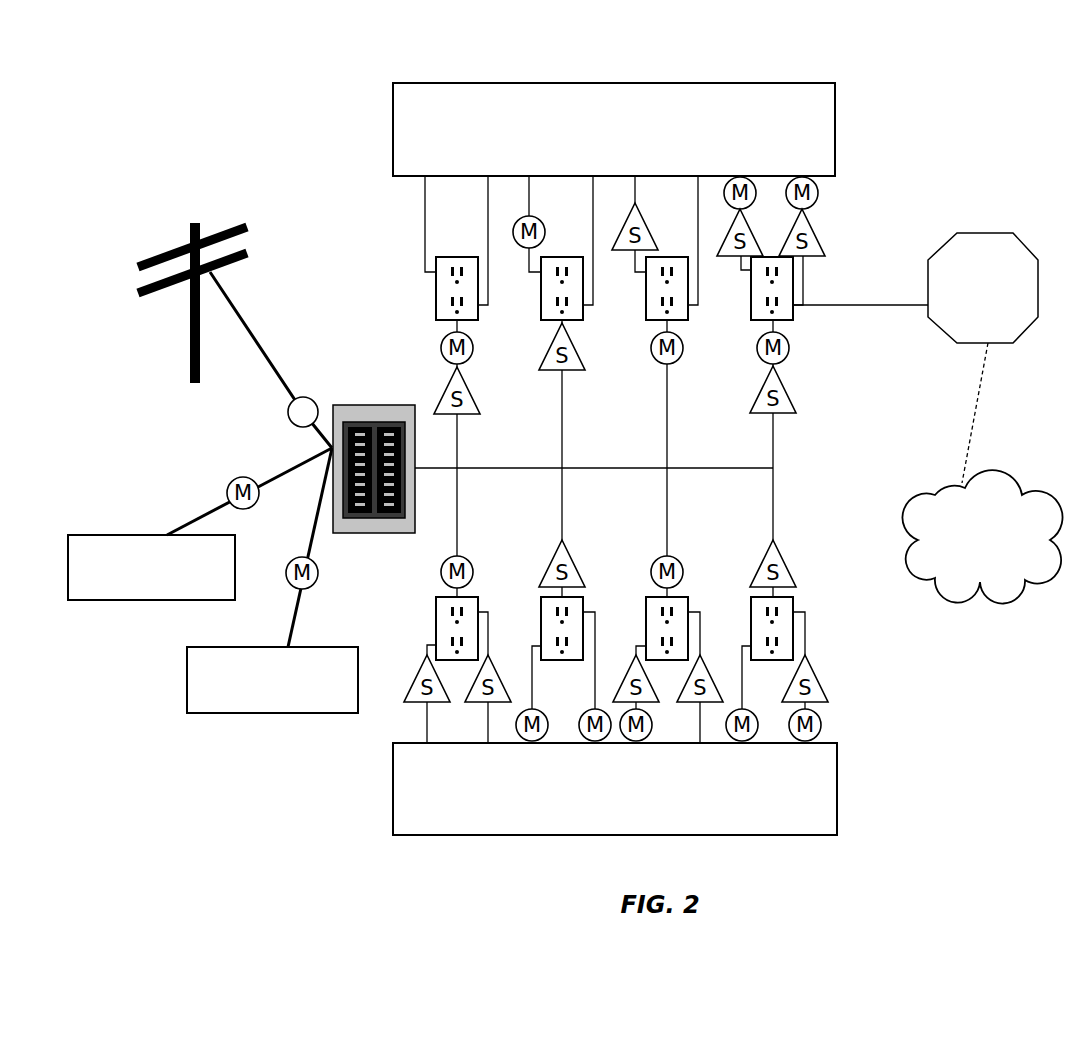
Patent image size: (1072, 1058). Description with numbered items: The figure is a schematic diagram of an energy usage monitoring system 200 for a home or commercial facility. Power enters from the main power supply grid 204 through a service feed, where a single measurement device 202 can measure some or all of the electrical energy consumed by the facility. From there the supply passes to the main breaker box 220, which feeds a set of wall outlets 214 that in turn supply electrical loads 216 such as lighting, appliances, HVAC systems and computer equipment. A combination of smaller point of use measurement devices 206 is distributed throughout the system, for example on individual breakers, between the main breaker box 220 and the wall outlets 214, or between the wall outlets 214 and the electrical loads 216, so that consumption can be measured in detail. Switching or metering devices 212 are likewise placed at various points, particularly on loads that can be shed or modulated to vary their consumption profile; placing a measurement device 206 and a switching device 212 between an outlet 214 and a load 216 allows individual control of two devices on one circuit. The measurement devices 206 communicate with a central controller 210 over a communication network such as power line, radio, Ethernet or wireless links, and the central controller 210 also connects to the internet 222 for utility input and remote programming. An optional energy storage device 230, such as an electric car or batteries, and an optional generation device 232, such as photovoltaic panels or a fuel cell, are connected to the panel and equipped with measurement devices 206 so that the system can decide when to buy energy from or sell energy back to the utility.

The energy usage monitoring system 200 is at (230, 147).
The single measurement device 202 is at (288, 417).
The main power supply grid 204 is at (167, 335).
The point of use measurement devices 206 is at (755, 207).
The central controller 210 is at (988, 242).
The switching or metering devices 212 is at (785, 405).
The wall outlets 214 is at (545, 642).
The electrical loads 216 is at (805, 135).
The main breaker box 220 is at (375, 400).
The internet 222 is at (1015, 517).
The energy storage device 230 is at (210, 707).
The generation device 232 is at (137, 590).